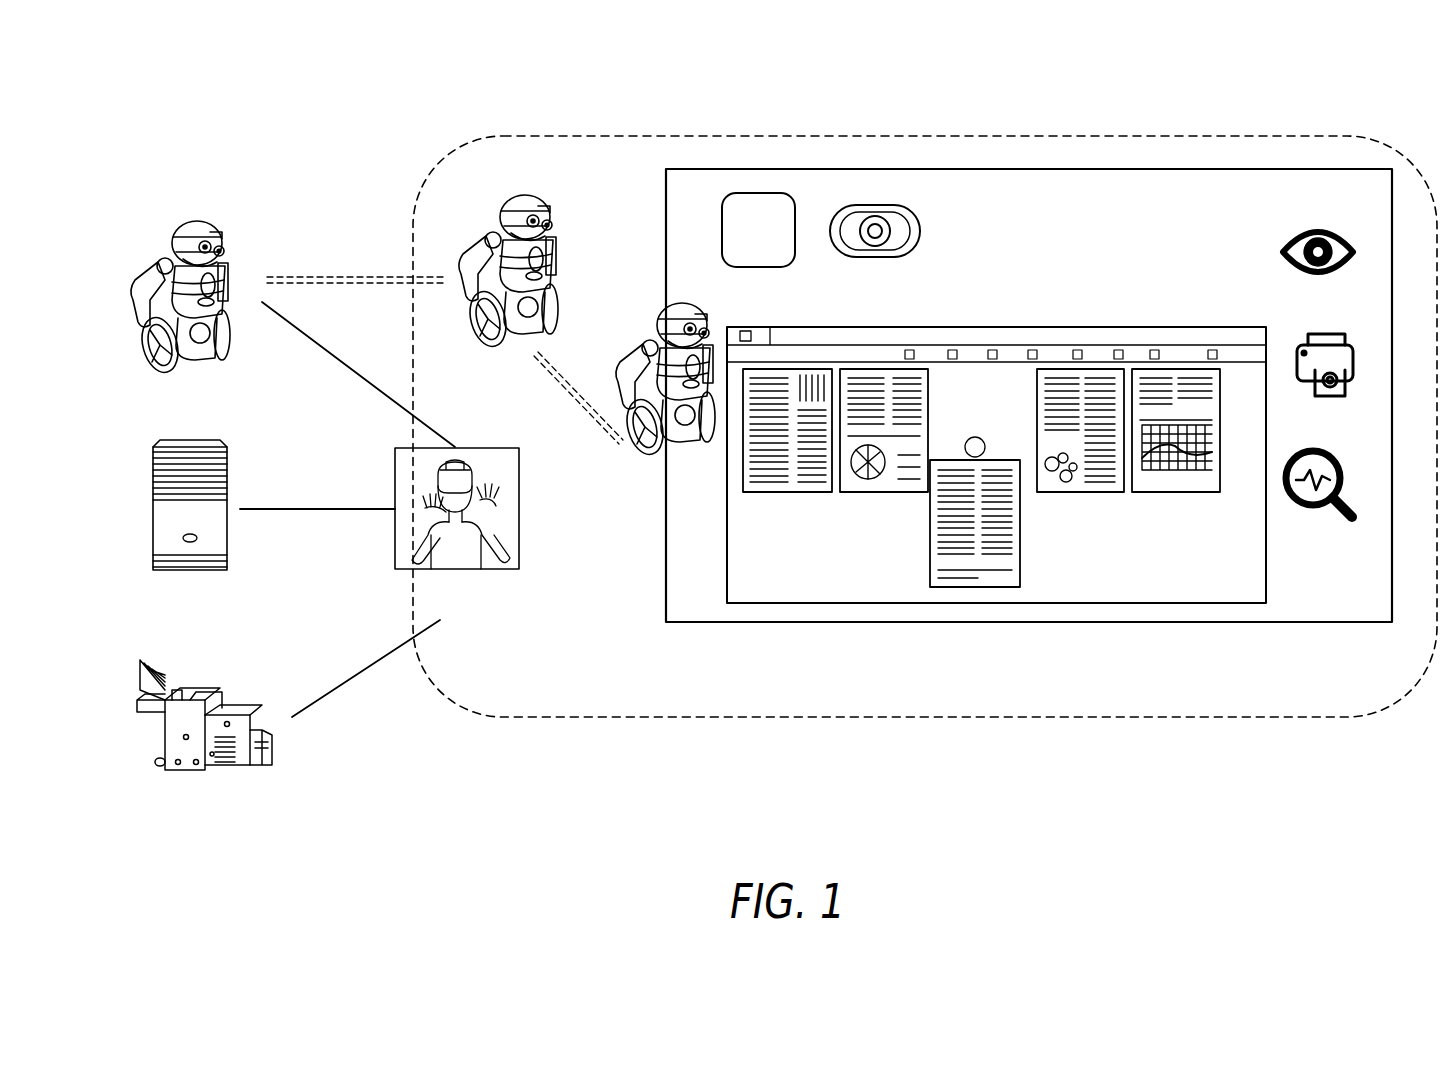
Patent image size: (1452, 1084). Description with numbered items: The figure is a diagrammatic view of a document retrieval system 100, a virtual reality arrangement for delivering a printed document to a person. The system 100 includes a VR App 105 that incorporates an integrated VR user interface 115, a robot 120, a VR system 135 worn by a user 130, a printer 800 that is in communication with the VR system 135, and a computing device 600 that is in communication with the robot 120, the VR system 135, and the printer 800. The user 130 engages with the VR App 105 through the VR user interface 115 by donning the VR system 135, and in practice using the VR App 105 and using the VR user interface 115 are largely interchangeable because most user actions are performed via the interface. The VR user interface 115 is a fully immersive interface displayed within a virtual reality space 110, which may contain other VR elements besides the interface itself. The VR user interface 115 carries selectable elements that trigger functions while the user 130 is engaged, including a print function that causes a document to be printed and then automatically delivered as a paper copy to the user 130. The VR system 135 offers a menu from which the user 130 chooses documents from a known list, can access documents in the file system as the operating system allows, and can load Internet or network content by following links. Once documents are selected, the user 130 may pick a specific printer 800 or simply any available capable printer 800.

The document retrieval system 100 is at (230, 112).
The VR App 105 is at (760, 186).
The virtual reality space 110 is at (663, 127).
The VR user interface 115 is at (1210, 622).
The robot 120 is at (198, 221).
The user 130 is at (520, 528).
The VR system 135 is at (478, 478).
The computing device 600 is at (228, 472).
The printer 800 is at (272, 757).